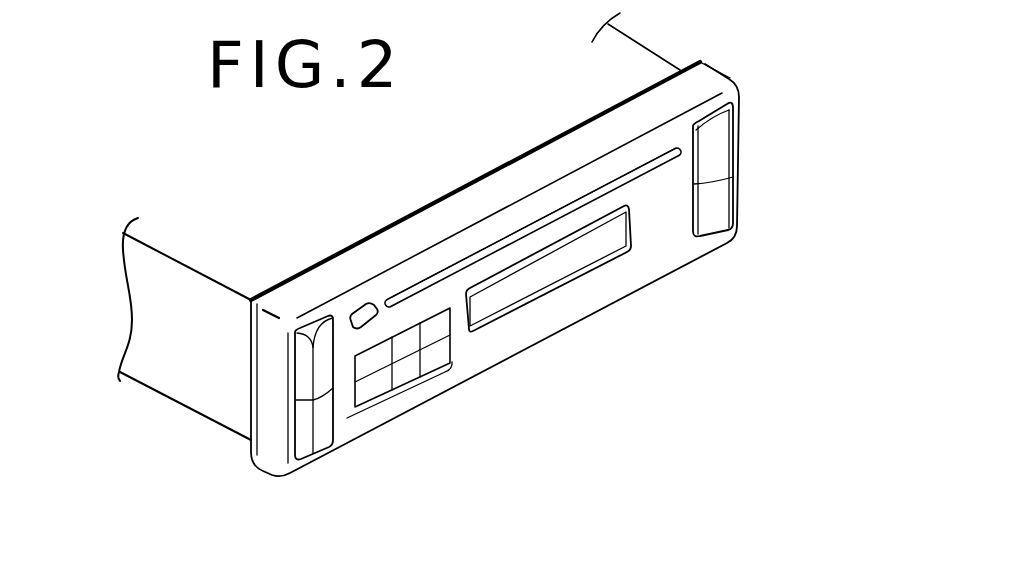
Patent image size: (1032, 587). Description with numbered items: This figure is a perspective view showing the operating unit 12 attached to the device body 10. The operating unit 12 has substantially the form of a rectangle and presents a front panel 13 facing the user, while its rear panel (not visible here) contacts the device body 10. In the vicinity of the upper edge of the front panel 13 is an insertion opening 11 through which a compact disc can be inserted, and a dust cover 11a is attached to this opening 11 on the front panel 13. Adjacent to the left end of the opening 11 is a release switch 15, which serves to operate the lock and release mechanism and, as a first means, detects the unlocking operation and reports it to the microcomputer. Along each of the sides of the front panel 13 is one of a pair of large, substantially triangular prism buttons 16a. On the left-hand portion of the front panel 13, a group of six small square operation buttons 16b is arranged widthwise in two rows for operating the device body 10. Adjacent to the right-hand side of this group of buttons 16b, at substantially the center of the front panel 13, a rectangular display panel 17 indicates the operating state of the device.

The device body 10 is at (603, 77).
The insertion opening 11 is at (547, 213).
The dust cover 11a is at (507, 233).
The operating unit 12 is at (680, 90).
The front panel 13 is at (652, 275).
The release switch 15 is at (357, 306).
The triangular prism buttons 16a is at (318, 440).
The operation buttons 16b is at (398, 401).
The display panel 17 is at (535, 288).